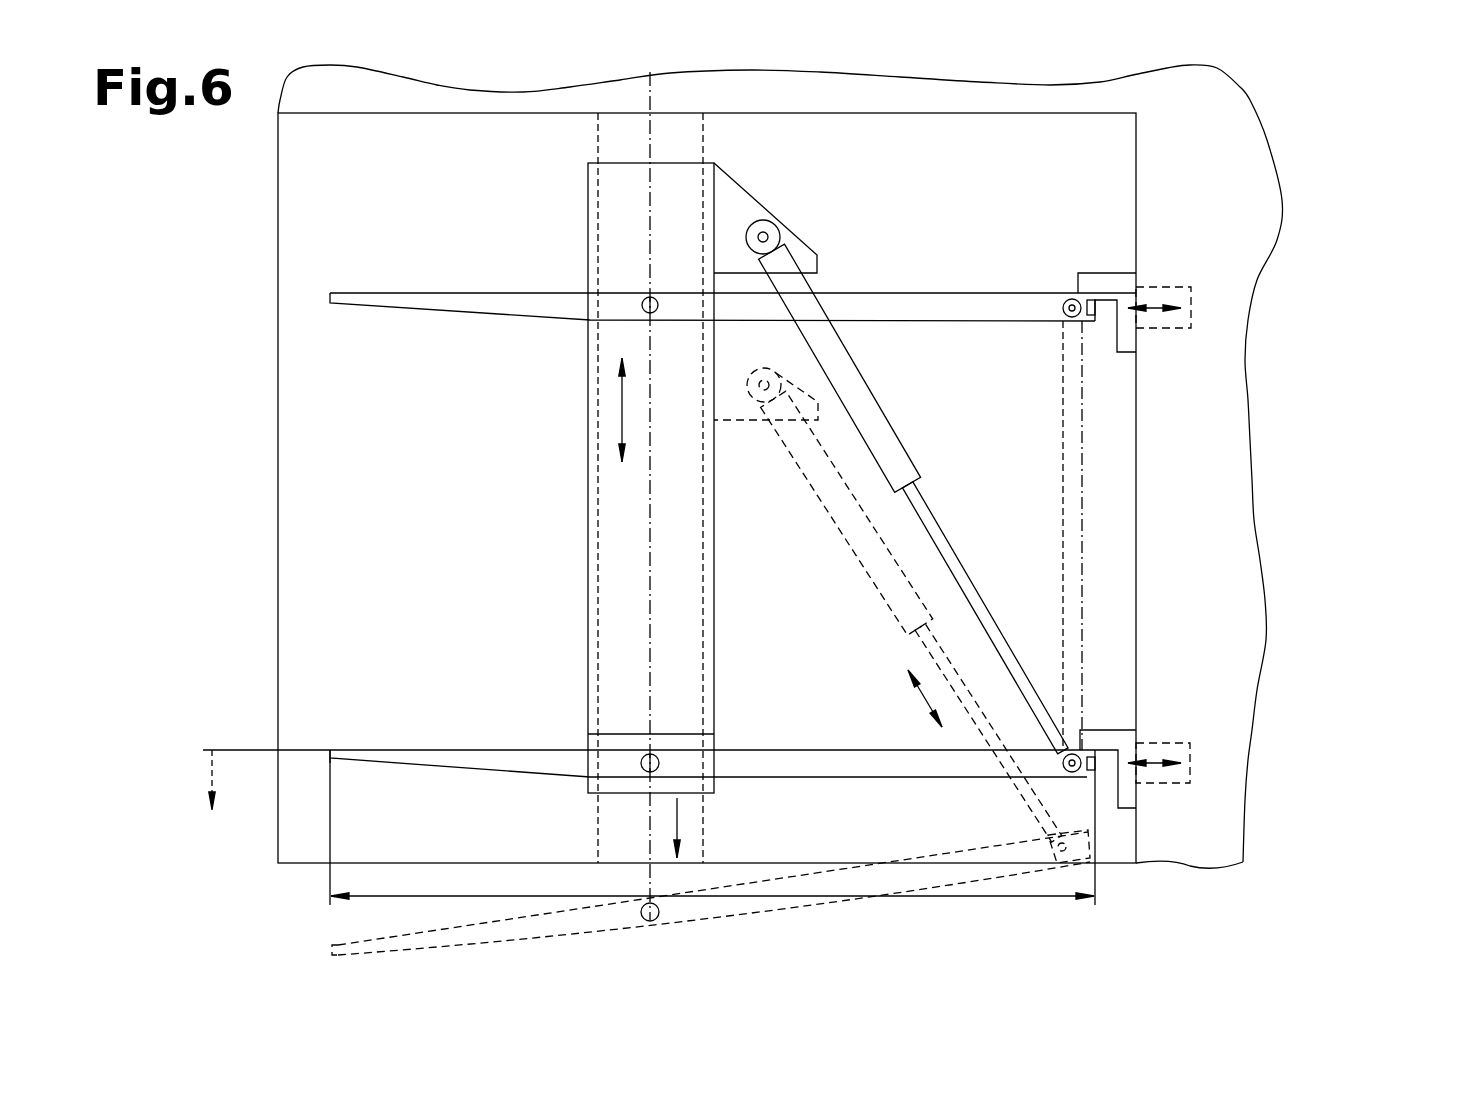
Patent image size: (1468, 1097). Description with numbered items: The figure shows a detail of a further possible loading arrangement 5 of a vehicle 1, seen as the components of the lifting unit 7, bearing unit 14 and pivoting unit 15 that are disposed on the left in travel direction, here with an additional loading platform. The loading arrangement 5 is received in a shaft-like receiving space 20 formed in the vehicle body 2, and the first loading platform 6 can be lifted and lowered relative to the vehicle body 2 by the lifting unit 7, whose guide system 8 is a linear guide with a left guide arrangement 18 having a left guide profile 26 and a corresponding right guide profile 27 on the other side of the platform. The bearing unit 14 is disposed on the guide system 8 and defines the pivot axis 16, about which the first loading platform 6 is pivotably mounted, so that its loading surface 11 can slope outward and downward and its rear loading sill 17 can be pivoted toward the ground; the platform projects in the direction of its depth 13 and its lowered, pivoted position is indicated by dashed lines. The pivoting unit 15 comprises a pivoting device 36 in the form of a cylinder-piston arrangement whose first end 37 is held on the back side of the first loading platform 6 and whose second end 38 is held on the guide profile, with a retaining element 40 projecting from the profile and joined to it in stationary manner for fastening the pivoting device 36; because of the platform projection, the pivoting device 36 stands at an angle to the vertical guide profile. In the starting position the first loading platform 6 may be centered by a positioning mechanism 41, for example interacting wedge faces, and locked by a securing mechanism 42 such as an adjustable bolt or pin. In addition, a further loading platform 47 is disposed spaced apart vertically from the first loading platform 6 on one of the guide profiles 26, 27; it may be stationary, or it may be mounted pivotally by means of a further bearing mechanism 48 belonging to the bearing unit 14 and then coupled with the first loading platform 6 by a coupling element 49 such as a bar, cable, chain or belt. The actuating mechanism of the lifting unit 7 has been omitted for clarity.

The vehicle 1 is at (192, 263).
The vehicle body 2 is at (1233, 268).
The loading arrangement 5 is at (240, 233).
The first loading platform 6 is at (443, 760).
The lifting unit 7 is at (437, 238).
The guide system 8 is at (502, 406).
The loading surface 11 is at (363, 735).
The depth 13 is at (993, 915).
The bearing unit 14 is at (701, 714).
The pivoting unit 15 is at (893, 390).
The pivot axis 16 is at (540, 684).
The rear loading sill 17 is at (328, 752).
The left guide arrangement 18 is at (512, 397).
The receiving space 20 is at (1117, 373).
The left guide profile 26 is at (503, 496).
The right guide profile 27 is at (640, 553).
The pivoting device 36 is at (842, 372).
The first end 37 is at (1062, 742).
The second end 38 is at (902, 502).
The retaining element 40 is at (725, 220).
The positioning mechanism 41 is at (1115, 292).
The securing mechanism 42 is at (1180, 300).
The further loading platform 47 is at (930, 304).
The further bearing mechanism 48 is at (627, 287).
The coupling element 49 is at (1073, 530).